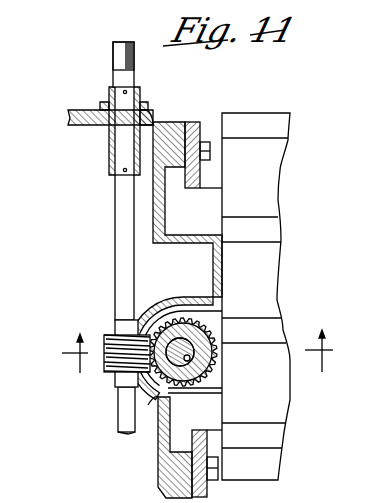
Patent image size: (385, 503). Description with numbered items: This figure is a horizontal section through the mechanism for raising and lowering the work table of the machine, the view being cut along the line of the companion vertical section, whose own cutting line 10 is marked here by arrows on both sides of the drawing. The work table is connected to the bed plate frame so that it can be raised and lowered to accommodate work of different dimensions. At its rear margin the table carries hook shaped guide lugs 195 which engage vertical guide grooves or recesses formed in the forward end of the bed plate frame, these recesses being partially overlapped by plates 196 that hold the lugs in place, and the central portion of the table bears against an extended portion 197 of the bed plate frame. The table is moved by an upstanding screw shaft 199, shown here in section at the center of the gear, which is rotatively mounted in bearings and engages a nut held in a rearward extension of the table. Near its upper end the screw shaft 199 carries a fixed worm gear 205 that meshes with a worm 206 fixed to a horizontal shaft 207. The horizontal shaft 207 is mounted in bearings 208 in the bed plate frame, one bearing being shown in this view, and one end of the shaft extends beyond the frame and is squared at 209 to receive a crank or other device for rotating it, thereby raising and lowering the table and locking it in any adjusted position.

The section line 10— 10 is at (198, 351).
The hook shaped guide lugs 195 is at (183, 215).
The plates 196 is at (198, 121).
The extended portion of the bed plate frame 197 is at (222, 277).
The screw shaft 199 is at (188, 362).
The worm gear 205 is at (213, 332).
The worm 206 is at (108, 374).
The horizontal shaft 207 is at (117, 198).
The bearings 208 is at (108, 139).
The squared end 209 is at (118, 58).